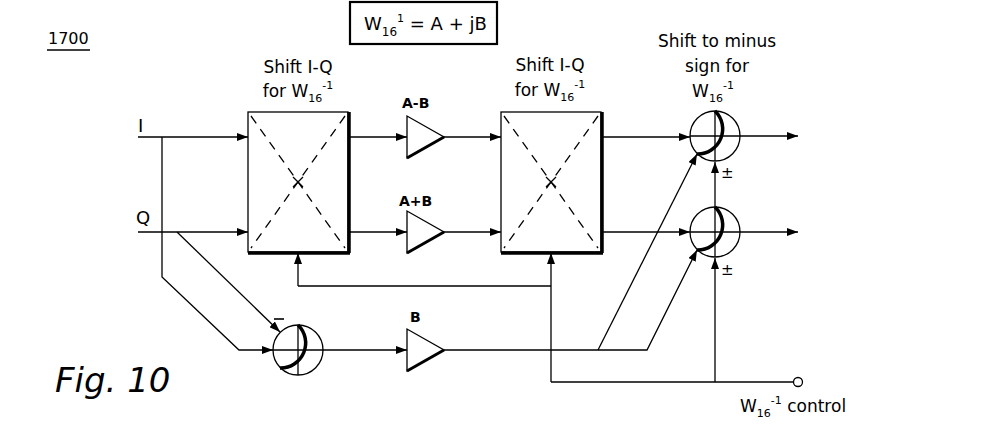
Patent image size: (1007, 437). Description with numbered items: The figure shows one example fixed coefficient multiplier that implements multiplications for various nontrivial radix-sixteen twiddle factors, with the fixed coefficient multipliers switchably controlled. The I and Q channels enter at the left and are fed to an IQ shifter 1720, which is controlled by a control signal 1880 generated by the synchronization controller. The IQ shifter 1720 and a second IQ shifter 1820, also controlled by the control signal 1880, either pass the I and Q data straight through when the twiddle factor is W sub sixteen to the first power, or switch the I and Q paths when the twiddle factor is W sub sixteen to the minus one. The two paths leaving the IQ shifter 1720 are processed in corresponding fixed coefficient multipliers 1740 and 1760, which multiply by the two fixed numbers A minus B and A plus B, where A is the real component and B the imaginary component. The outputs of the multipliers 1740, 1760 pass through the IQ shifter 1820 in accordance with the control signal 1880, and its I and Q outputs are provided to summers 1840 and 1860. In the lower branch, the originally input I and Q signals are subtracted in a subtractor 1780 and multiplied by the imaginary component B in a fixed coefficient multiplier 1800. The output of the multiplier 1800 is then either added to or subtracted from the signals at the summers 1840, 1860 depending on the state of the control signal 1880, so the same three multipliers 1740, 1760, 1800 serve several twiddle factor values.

The IQ shifter 1720 is at (257, 125).
The fixed coefficient multiplier 1740 is at (423, 128).
The fixed coefficient multiplier 1760 is at (423, 223).
The subtractor 1780 is at (310, 335).
The fixed coefficient multiplier 1800 is at (418, 345).
The IQ shifter 1820 is at (590, 113).
The summer 1840 is at (732, 128).
The summer 1860 is at (733, 212).
The control signal 1880 is at (802, 378).